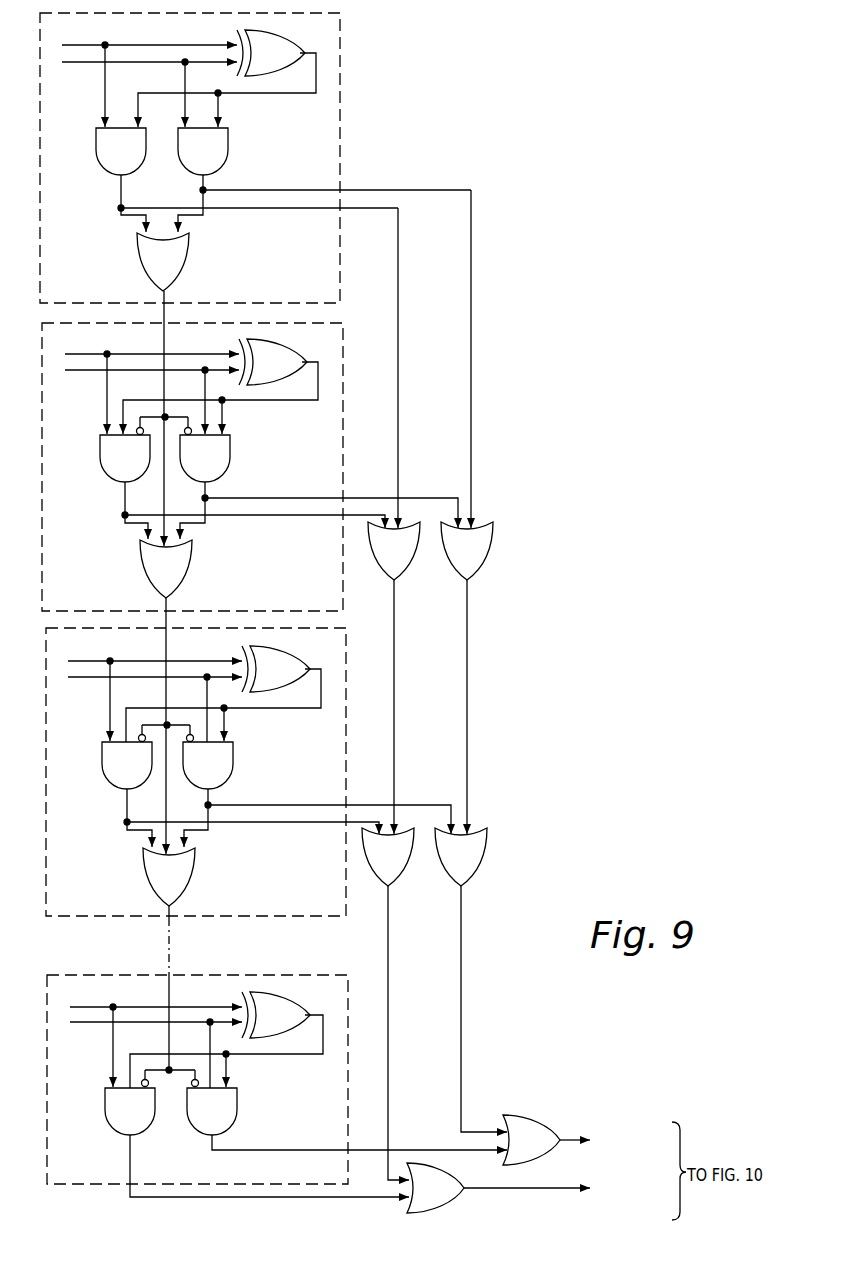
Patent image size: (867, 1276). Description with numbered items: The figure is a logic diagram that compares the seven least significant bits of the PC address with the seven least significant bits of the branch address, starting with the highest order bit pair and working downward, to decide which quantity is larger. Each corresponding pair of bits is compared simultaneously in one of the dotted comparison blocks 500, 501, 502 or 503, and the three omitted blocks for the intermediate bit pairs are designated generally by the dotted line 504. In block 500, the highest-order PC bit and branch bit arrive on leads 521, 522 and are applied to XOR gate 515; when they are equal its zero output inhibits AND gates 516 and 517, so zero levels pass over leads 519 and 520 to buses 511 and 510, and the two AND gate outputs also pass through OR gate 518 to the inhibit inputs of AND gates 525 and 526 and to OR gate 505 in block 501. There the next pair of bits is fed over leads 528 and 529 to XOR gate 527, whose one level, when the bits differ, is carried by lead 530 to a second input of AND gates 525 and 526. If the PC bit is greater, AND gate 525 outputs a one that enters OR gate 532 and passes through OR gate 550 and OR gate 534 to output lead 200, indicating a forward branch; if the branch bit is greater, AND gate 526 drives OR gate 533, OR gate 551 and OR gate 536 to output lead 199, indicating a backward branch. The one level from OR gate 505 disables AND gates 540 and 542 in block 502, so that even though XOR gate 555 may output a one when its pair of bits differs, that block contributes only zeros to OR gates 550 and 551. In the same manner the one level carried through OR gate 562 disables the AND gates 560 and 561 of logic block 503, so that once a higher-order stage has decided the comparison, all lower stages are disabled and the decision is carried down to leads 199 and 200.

The comparison logic block 500 is at (340, 87).
The comparison logic block 501 is at (343, 408).
The comparison logic block 502 is at (346, 684).
The comparison logic block 503 is at (349, 990).
The dotted line 504 is at (180, 945).
The OR gate 505 is at (190, 568).
The bus 510 is at (398, 292).
The bus 511 is at (472, 292).
The XOR gate 515 is at (300, 37).
The AND gate 516 is at (101, 163).
The AND gate 517 is at (228, 160).
The OR gate 518 is at (190, 262).
The lead 519 is at (310, 190).
The lead 520 is at (310, 208).
The lead 521 is at (128, 45).
The lead 522 is at (124, 63).
The AND gate 525 is at (105, 470).
The AND gate 526 is at (230, 468).
The XOR gate 527 is at (288, 342).
The lead 528 is at (114, 354).
The lead 529 is at (113, 371).
The lead 530 is at (292, 400).
The OR gate 532 is at (405, 570).
The OR gate 533 is at (483, 560).
The OR gate 534 is at (423, 1165).
The OR gate 536 is at (530, 1115).
The AND gate 540 is at (105, 770).
The AND gate 542 is at (233, 770).
The OR gate 550 is at (400, 878).
The OR gate 551 is at (478, 860).
The XOR gate 555 is at (290, 650).
The AND gate 560 is at (108, 1116).
The AND gate 561 is at (237, 1118).
The OR gate 562 is at (148, 885).
The output lead 199 is at (570, 1138).
The output lead 200 is at (483, 1190).